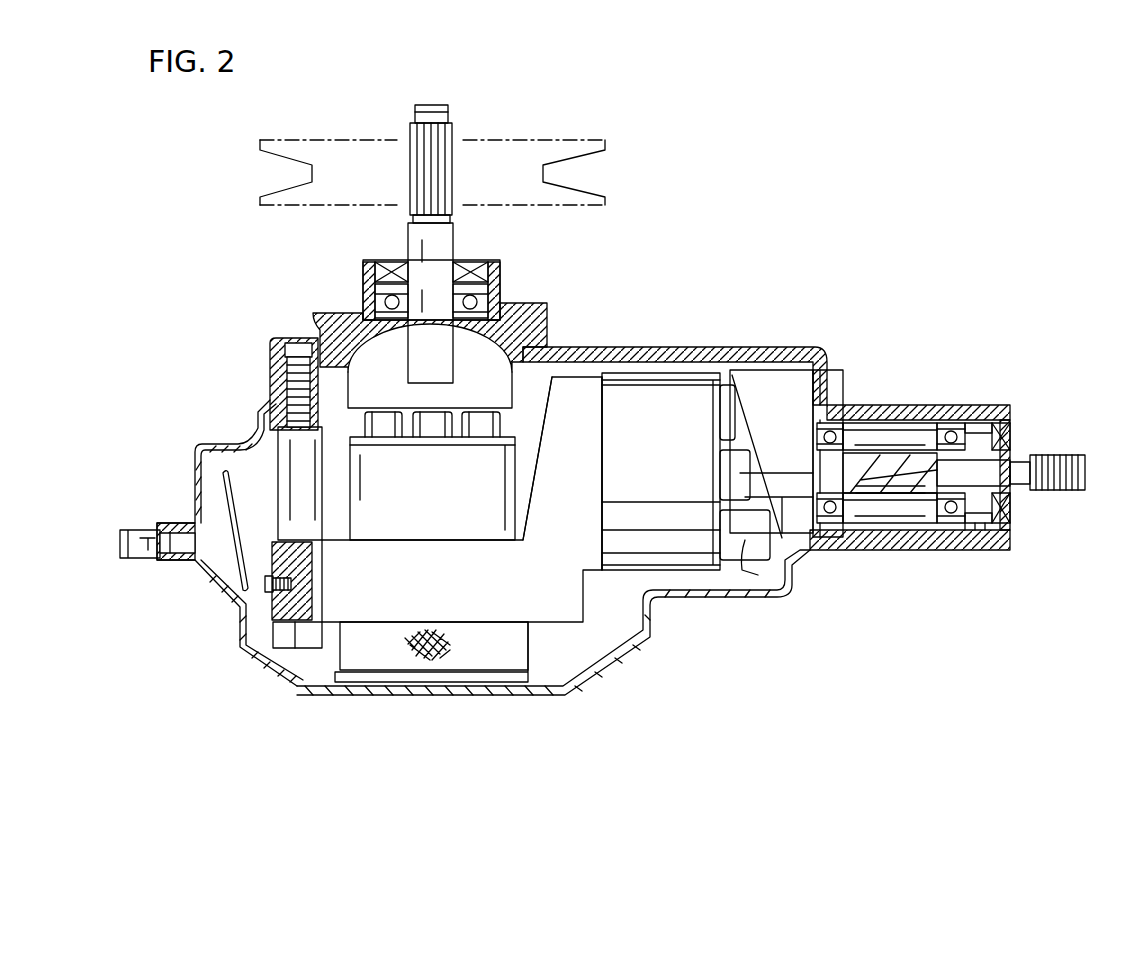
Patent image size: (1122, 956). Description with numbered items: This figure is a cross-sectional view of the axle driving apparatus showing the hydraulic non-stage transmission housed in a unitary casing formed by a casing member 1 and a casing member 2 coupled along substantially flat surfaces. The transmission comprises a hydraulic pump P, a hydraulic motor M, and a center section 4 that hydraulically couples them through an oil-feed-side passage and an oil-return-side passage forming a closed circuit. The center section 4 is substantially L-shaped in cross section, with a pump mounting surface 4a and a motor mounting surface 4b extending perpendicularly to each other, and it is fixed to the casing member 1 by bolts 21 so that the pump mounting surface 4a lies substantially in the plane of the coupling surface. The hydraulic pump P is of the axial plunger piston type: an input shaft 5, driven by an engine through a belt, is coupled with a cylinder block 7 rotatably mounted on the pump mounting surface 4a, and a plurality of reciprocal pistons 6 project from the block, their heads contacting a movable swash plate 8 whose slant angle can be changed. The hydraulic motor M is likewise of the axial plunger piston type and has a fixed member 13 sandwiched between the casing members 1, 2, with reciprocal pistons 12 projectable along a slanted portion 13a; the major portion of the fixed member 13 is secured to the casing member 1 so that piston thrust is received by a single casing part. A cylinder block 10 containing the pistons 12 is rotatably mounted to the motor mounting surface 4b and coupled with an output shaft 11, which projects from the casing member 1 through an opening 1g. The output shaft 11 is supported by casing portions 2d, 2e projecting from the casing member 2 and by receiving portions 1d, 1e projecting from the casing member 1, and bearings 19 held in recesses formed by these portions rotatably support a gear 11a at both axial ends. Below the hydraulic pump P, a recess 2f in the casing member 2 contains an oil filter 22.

The casing member 1 is at (583, 347).
The casing member 2 is at (636, 655).
The center section 4 is at (447, 596).
The pump mounting surface 4a is at (348, 532).
The motor mounting surface 4b is at (592, 478).
The input shaft 5 is at (405, 236).
The piston 6 is at (358, 424).
The cylinder block 7 is at (436, 520).
The movable swash plate 8 is at (448, 394).
The cylinder block 10 is at (670, 490).
The output shaft 11 is at (1060, 455).
The gear 11a is at (880, 498).
The piston 12 is at (755, 557).
The fixed member 13 is at (792, 460).
The slanted portion 13a is at (733, 440).
The bearing 19 is at (853, 402).
The receiving portion 1d is at (835, 418).
The receiving portion 1e is at (977, 410).
The opening 1g is at (997, 520).
The casing portion 2d is at (833, 517).
The casing portion 2e is at (970, 525).
The recess 2f is at (407, 678).
The bolt 21 is at (285, 650).
The oil filter 22 is at (527, 650).
The hydraulic motor M is at (690, 570).
The hydraulic pump P is at (337, 388).